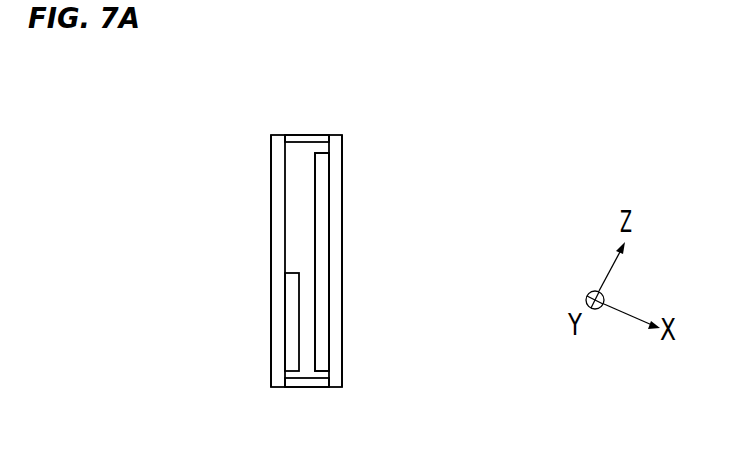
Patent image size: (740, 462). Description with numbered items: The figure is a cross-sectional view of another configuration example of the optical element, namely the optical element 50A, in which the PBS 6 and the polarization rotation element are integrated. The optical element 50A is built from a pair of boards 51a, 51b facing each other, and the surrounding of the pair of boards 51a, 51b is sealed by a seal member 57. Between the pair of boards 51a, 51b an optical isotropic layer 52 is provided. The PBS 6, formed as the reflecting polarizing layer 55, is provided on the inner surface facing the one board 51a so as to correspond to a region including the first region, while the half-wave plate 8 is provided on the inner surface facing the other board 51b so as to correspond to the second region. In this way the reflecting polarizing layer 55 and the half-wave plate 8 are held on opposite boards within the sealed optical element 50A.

The optical element 50A is at (258, 115).
The board 51a is at (337, 186).
The board 51b is at (277, 203).
The optical isotropic layer 52 is at (301, 148).
The seal member 57 is at (307, 383).
The reflecting polarizing layer 55 is at (322, 247).
The PBS 6 is at (322, 262).
The λ/2 plate 8 is at (292, 321).